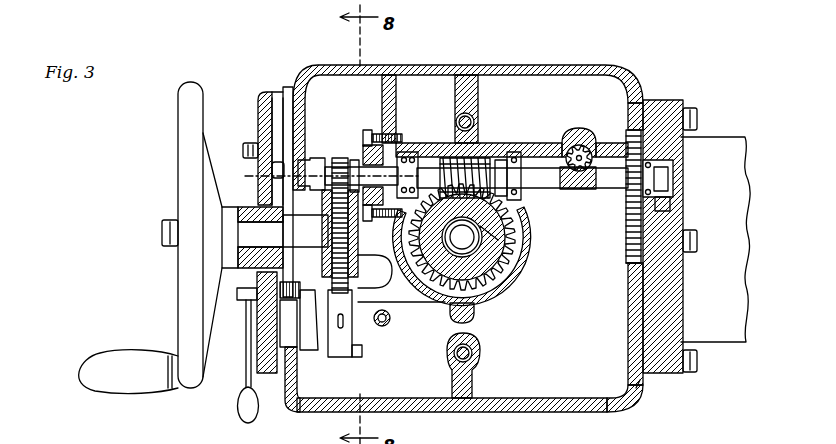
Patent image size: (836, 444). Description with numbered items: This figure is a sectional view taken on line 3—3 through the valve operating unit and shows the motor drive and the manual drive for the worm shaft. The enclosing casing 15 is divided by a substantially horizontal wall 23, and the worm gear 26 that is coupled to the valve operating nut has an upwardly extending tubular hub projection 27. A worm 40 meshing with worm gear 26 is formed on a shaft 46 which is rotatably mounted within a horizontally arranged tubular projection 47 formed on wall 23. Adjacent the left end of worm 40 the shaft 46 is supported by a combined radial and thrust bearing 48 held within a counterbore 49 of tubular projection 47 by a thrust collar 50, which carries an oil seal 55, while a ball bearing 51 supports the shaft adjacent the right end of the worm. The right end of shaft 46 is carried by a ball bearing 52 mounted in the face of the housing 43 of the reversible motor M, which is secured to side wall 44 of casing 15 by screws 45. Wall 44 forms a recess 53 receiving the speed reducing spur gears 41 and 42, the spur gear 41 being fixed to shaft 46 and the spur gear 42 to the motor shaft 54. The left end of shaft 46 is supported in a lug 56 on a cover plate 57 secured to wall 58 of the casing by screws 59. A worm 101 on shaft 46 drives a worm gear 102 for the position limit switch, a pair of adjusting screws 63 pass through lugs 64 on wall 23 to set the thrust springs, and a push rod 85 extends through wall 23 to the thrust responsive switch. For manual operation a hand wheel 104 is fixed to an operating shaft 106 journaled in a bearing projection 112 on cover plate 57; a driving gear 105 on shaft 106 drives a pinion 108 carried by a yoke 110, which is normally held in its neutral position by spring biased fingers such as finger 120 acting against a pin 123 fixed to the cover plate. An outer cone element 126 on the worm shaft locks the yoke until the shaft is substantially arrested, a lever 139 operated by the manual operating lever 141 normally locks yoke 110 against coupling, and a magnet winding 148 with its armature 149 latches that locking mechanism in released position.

The section line 3 is at (462, 237).
The casing 15 is at (556, 65).
The horizontal wall 23 is at (464, 257).
The worm gear 26 is at (512, 257).
The tubular hub projection 27 is at (512, 262).
The worm 40 is at (484, 158).
The spur gear 41 is at (660, 110).
The spur gear 42 is at (628, 265).
The motor housing 43 is at (748, 286).
The side wall 44 is at (641, 382).
The screws 45 is at (698, 362).
The worm shaft 46 is at (522, 178).
The tubular projection 47 is at (505, 152).
The combined radial and thrust bearing 48 is at (418, 152).
The counterbore 49 is at (404, 150).
The thrust collar 50 is at (372, 132).
The ball bearing 51 is at (518, 155).
The ball bearing 52 is at (650, 160).
The recess 53 is at (633, 128).
The motor shaft 54 is at (665, 212).
The oil seal 55 is at (355, 168).
The lug 56 is at (273, 165).
The cover plate 57 is at (264, 93).
The wall 58 is at (288, 88).
The screws 59 is at (244, 150).
The adjusting screws 63 is at (458, 118).
The lugs 64 is at (468, 78).
The push rod 85 is at (390, 319).
The worm 101 is at (577, 190).
The worm gear 102 is at (590, 150).
The hand wheel 104 is at (183, 198).
The driving gear 105 is at (358, 270).
The operating shaft 106 is at (332, 211).
The pinion 108 is at (340, 158).
The yoke 110 is at (360, 250).
The bearing projection 112 is at (248, 207).
The finger 120 is at (352, 320).
The pin 123 is at (362, 348).
The outer cone element 126 is at (312, 162).
The lever 139 is at (315, 350).
The manual operating lever 141 is at (238, 408).
The magnet winding 148 is at (262, 282).
The armature 149 is at (300, 290).